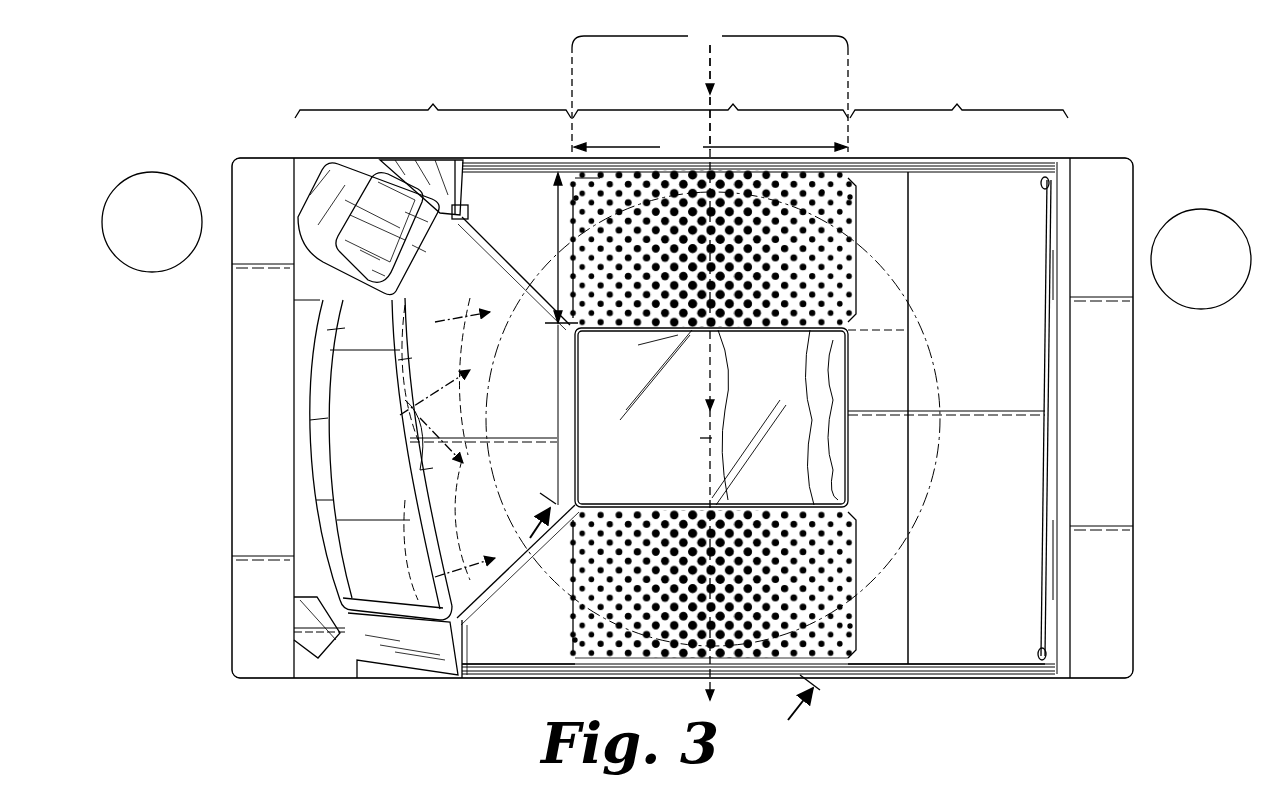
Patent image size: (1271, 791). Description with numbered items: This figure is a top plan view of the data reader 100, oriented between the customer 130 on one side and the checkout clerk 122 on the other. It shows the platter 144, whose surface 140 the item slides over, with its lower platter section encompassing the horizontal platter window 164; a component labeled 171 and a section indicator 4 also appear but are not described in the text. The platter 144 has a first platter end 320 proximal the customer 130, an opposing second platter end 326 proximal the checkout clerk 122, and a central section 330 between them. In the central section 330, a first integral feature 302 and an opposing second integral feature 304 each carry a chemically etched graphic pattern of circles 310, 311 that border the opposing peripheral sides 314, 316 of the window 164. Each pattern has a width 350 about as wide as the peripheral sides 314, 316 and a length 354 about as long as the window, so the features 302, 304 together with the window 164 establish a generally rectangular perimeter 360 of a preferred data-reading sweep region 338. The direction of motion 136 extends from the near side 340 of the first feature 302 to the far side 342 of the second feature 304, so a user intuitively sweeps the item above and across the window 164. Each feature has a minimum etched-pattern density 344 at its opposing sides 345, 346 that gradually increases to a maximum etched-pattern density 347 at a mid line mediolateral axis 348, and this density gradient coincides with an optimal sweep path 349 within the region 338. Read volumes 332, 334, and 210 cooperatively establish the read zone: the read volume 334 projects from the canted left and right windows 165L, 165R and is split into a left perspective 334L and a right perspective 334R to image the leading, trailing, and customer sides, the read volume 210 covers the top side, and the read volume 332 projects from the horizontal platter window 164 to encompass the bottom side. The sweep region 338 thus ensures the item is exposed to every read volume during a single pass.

The data reader 100 is at (230, 88).
The customer 130 is at (163, 173).
The checkout clerk 122 is at (1218, 212).
The surface 140 is at (972, 554).
The platter 144 is at (1030, 656).
The customer display/scanner tower 171 is at (368, 457).
The direction of motion 136 is at (690, 97).
The optimal sweep path 349 is at (723, 372).
The preferred data-reading sweep region 338 is at (710, 89).
The first platter end 320 is at (433, 99).
The central section 330 is at (710, 99).
The second platter end 326 is at (959, 99).
The near side 340 is at (596, 178).
The width 350 is at (710, 147).
The etched graphic pattern of circles 310 is at (823, 192).
The opposing side 345 is at (574, 198).
The length 354 is at (557, 233).
The opposing side 346 is at (850, 197).
The first integral feature 302 is at (858, 228).
The second integral feature 304 is at (858, 596).
The read volume 210 is at (905, 293).
The right window 165R is at (403, 313).
The left window 165L is at (406, 562).
The right perspective 334R is at (445, 376).
The left perspective 334L is at (457, 499).
The read volume 334 is at (410, 410).
The peripheral side 314 is at (645, 333).
The peripheral side 316 is at (657, 505).
The horizontal platter window 164 is at (830, 372).
The read volume 332 is at (845, 471).
The maximum etched-pattern density 347 is at (738, 415).
The mid line mediolateral axis 348 is at (710, 437).
The minimum etched-pattern density 344 is at (812, 417).
The etched graphic pattern of circles 311 is at (540, 664).
The rectangular perimeter 360 is at (582, 660).
The far side 342 is at (842, 663).
The section line 4- 4 is at (666, 615).